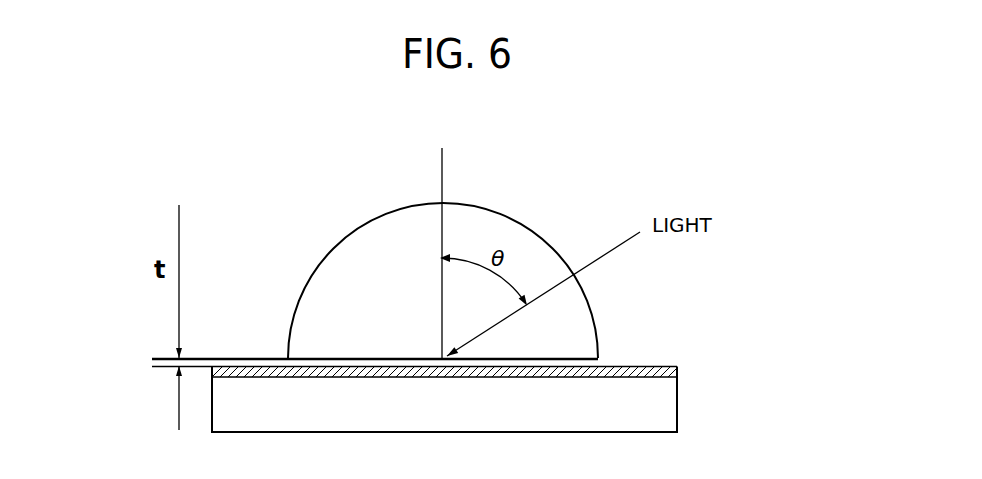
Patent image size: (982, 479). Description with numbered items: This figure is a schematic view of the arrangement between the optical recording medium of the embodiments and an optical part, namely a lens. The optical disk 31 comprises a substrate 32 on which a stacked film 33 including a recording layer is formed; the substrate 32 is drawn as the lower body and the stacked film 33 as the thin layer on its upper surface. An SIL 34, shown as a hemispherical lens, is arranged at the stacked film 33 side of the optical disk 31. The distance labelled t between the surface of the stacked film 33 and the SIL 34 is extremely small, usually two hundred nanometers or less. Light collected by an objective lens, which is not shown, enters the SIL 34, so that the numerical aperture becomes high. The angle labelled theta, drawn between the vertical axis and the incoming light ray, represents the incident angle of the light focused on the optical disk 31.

The optical disk 31 is at (474, 373).
The substrate 32 is at (600, 407).
The stacked film 33 is at (598, 362).
The SIL 34 is at (357, 248).